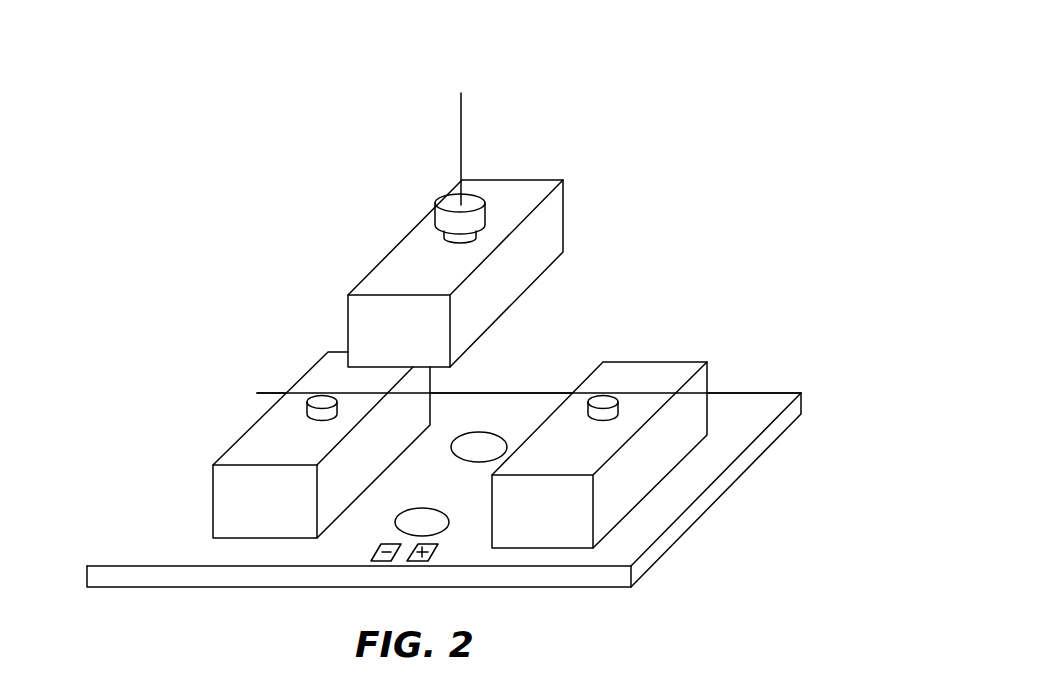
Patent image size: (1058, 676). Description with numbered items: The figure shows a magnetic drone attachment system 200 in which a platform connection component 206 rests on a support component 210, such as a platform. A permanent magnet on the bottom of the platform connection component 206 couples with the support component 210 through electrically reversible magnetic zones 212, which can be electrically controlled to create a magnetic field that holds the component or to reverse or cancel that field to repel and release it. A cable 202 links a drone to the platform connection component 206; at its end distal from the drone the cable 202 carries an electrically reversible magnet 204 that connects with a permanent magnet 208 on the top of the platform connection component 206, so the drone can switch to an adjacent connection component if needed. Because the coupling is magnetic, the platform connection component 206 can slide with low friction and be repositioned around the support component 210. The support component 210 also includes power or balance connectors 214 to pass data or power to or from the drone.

The magnetic drone attachment system 200 is at (708, 40).
The cable 202 is at (460, 105).
The electrically reversible magnet 204 is at (446, 194).
The platform connection component 206 is at (548, 183).
The permanent magnet 208 is at (441, 238).
The support component 210 is at (150, 587).
The electrically reversible magnetic zones 212 is at (448, 527).
The power or balance connectors 214 is at (375, 562).